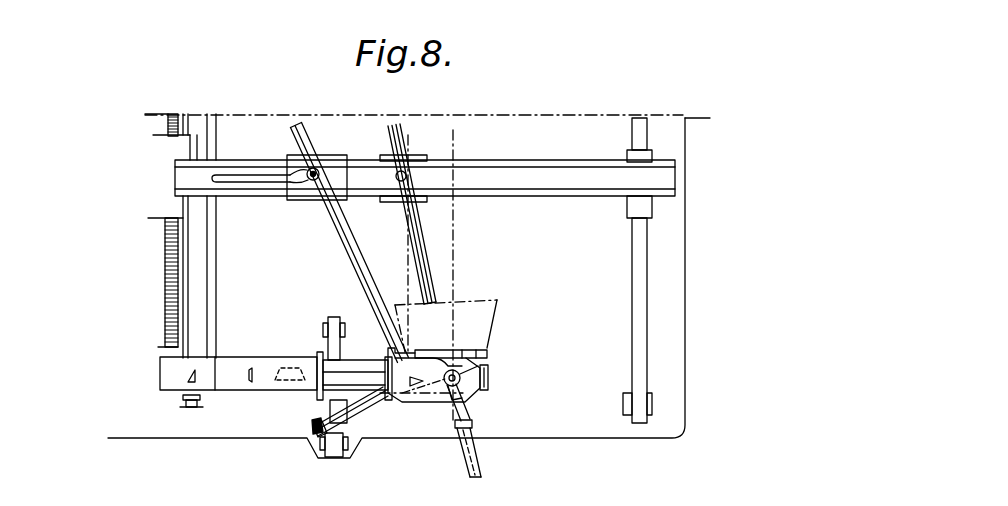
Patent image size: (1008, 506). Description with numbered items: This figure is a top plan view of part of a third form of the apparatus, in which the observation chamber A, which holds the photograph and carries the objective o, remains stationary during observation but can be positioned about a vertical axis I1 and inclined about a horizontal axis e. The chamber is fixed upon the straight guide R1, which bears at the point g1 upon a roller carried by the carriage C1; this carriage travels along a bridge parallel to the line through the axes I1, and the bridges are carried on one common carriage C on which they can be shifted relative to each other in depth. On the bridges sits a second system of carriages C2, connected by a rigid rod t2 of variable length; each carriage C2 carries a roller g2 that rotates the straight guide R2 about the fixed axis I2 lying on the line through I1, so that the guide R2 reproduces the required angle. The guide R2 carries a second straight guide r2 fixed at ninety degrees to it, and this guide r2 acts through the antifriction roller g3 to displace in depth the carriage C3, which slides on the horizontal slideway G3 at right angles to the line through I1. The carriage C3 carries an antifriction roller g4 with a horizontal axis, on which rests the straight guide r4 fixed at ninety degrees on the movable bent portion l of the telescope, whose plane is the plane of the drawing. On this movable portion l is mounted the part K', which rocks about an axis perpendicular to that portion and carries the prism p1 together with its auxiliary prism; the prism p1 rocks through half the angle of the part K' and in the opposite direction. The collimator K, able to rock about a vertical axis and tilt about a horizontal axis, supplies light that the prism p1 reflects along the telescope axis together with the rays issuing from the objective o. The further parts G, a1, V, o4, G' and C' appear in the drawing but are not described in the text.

The main beam C is at (398, 168).
The pawl bracket G is at (171, 124).
The vertical tube a1 is at (208, 290).
The toothed strip V is at (167, 263).
The foot o4 is at (190, 407).
The post G3 is at (332, 346).
The lower rod r4 is at (317, 407).
The inclined rod r2 is at (371, 402).
The joint g4 is at (312, 421).
The joint g3 is at (318, 433).
The bracket C3 is at (335, 430).
The slot rod t2 is at (265, 180).
The block C2 is at (331, 166).
The bearing g2 is at (313, 182).
The rod R2 is at (291, 140).
The clamp C1 is at (416, 158).
The bearing g1 is at (400, 178).
The rod R1 is at (422, 252).
The column head G' is at (623, 140).
The column C' is at (623, 309).
The frame A is at (490, 316).
The housing l is at (428, 398).
The plate I2 is at (414, 355).
The plate I1 is at (468, 350).
The pivot o is at (470, 364).
The stop e is at (489, 376).
The lever K is at (474, 406).
The lever rod K' is at (482, 452).
The pin p1 is at (453, 407).